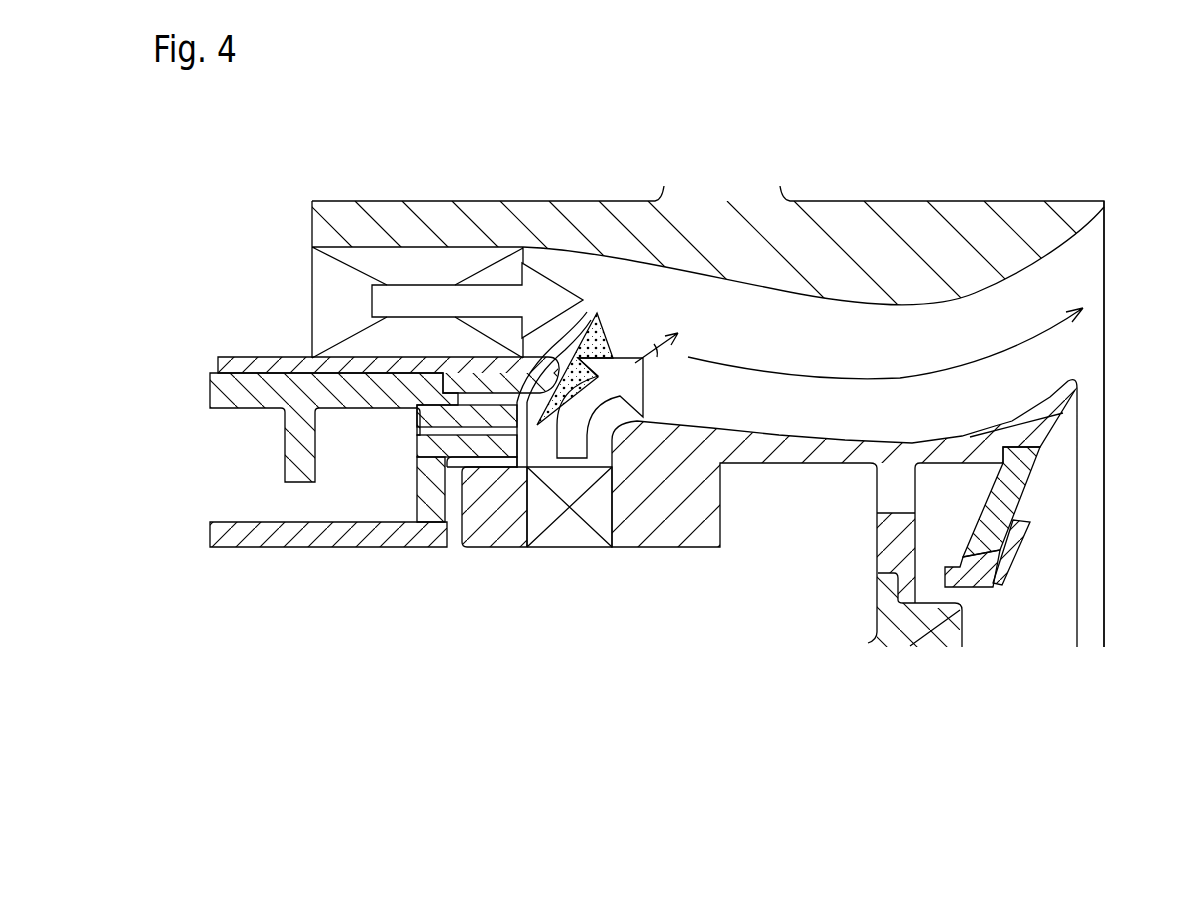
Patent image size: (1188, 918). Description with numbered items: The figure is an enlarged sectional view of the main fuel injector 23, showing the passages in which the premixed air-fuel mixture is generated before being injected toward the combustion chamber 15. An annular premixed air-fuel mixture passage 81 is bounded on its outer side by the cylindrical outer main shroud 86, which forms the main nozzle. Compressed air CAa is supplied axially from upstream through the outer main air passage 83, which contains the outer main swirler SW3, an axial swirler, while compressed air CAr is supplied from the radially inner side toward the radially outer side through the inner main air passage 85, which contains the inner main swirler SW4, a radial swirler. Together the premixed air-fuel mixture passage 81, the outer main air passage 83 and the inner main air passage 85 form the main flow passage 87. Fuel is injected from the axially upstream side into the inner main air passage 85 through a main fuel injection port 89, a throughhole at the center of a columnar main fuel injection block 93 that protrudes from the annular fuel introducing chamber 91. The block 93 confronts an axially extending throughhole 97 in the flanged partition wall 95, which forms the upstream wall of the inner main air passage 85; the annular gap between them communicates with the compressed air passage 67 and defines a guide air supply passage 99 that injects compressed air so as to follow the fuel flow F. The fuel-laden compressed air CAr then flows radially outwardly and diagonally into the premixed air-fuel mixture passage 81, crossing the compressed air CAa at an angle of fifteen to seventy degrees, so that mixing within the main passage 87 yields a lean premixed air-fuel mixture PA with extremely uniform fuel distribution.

The combustion chamber 15 is at (1186, 497).
The main fuel injector 23 is at (1119, 272).
The compressed air passage 67 is at (645, 667).
The premixed air-fuel mixture passage 81 is at (845, 361).
The outer main air passage 83 is at (540, 263).
The inner main air passage 85 is at (610, 428).
The outer main shroud 86 is at (1028, 201).
The main flow passage 87 is at (885, 343).
The main fuel injection port 89 is at (555, 592).
The fuel introducing chamber 91 is at (350, 483).
The main fuel injection block 93 is at (535, 470).
The flanged partition wall 95 is at (490, 535).
The throughhole 97 is at (585, 312).
The guide air supply passage 99 is at (480, 460).
The outer main swirler SW3 is at (357, 253).
The inner main swirler SW4 is at (585, 532).
The compressed air CAa is at (453, 300).
The compressed air CAr is at (640, 392).
The lean premixed air-fuel mixture PA is at (943, 373).
The fuel flow F is at (618, 322).